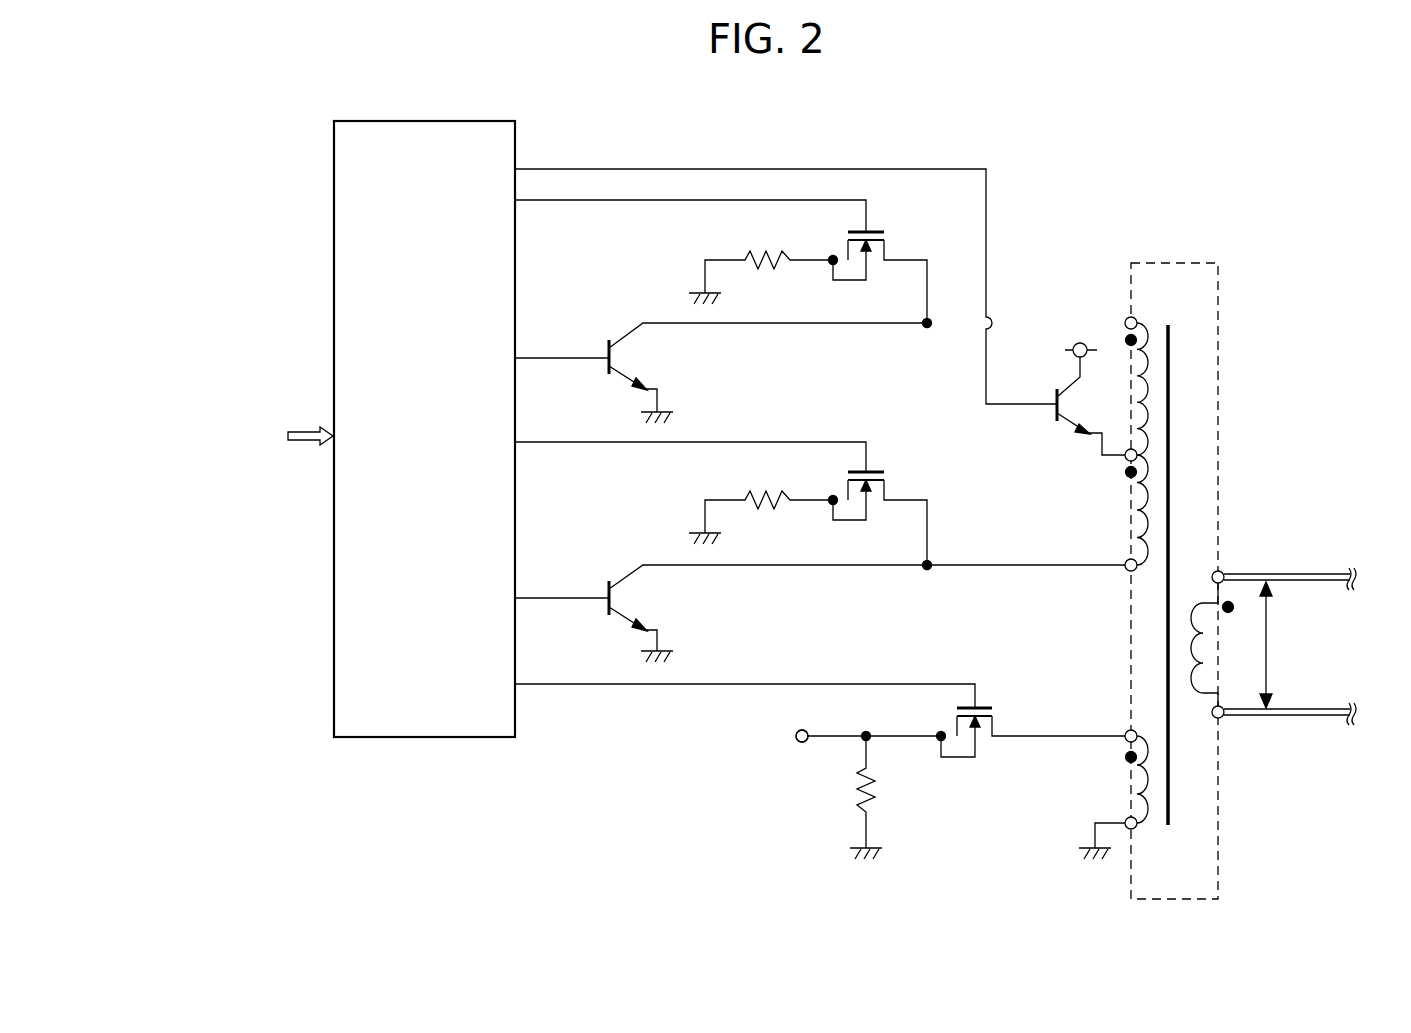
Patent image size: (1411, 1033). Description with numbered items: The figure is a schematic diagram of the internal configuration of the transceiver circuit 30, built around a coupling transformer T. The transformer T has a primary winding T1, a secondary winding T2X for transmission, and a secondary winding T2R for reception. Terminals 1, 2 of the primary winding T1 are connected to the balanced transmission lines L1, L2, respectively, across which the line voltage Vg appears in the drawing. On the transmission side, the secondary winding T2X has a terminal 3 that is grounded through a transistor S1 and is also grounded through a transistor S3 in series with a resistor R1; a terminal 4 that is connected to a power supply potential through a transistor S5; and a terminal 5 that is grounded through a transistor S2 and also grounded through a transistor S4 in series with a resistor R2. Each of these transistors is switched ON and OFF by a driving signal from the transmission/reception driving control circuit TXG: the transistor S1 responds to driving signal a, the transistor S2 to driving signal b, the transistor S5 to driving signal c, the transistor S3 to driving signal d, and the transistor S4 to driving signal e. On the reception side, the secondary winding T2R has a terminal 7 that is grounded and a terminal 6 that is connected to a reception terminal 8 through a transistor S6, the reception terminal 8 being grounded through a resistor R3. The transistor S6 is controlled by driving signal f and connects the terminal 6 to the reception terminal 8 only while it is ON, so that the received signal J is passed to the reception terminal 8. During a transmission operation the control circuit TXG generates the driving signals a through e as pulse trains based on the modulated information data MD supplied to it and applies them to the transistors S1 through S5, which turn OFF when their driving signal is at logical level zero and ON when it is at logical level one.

The transceiver circuit 30 is at (1125, 176).
The transmission/reception driving control circuit TXG is at (478, 121).
The modulated information data MD is at (232, 437).
The driving signal a is at (562, 345).
The driving signal b is at (562, 585).
The driving signal c is at (786, 275).
The driving signal d is at (690, 205).
The driving signal e is at (690, 444).
The driving signal f is at (745, 683).
The transistor S1 is at (609, 346).
The transistor S2 is at (609, 587).
The transistor S3 is at (886, 258).
The transistor S4 is at (886, 498).
The transistor S5 is at (1059, 419).
The transistor S6 is at (995, 733).
The resistor R1 is at (766, 257).
The resistor R2 is at (766, 497).
The resistor R3 is at (880, 790).
The received signal J is at (810, 739).
The reception terminal 8 is at (801, 743).
The coupling transformer T is at (1182, 262).
The secondary winding for transmission T2X is at (1152, 314).
The secondary winding for reception T2R is at (1156, 834).
The primary winding T1 is at (1201, 596).
The terminal 1 is at (1223, 566).
The terminal 2 is at (1223, 726).
The terminal 3 is at (1123, 311).
The terminal 4 is at (1123, 443).
The terminal 5 is at (1123, 554).
The terminal 6 is at (1123, 725).
The terminal 7 is at (1123, 812).
The balanced transmission line L1 is at (1301, 573).
The balanced transmission line L2 is at (1300, 718).
The line voltage Vg is at (1280, 645).